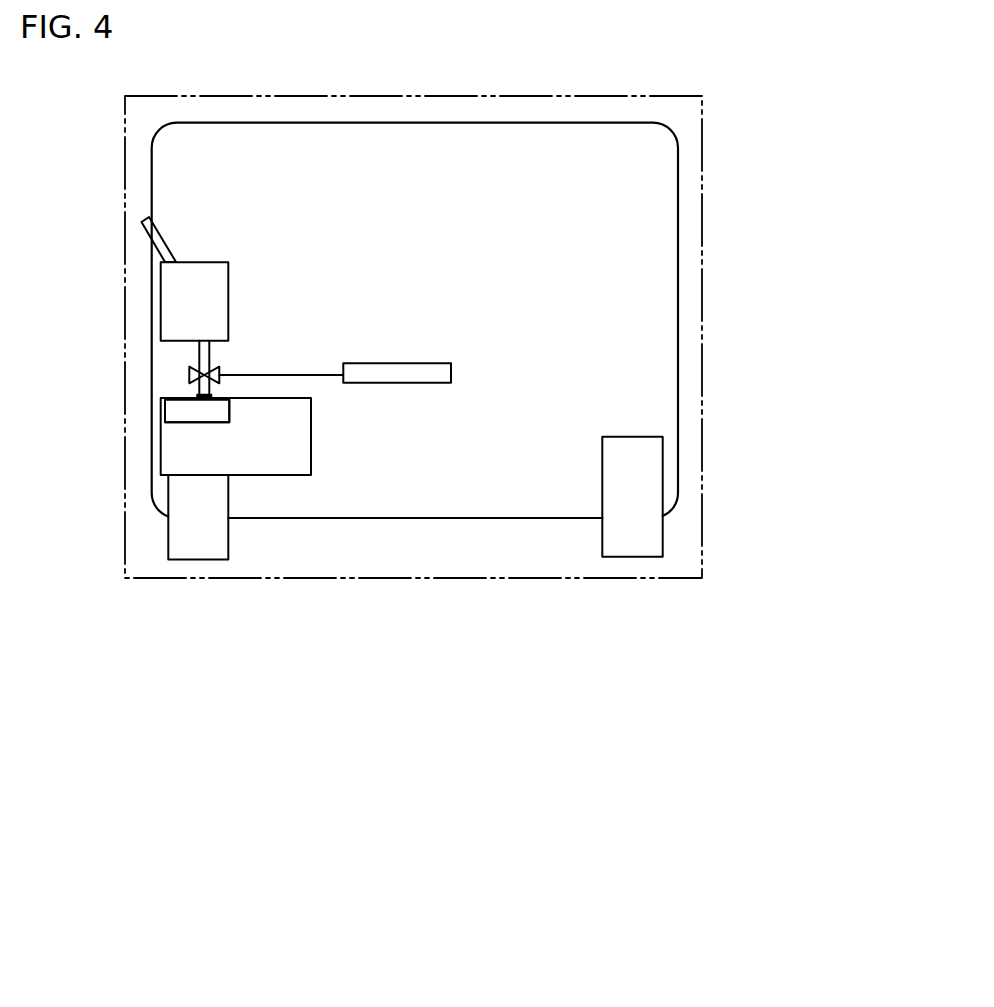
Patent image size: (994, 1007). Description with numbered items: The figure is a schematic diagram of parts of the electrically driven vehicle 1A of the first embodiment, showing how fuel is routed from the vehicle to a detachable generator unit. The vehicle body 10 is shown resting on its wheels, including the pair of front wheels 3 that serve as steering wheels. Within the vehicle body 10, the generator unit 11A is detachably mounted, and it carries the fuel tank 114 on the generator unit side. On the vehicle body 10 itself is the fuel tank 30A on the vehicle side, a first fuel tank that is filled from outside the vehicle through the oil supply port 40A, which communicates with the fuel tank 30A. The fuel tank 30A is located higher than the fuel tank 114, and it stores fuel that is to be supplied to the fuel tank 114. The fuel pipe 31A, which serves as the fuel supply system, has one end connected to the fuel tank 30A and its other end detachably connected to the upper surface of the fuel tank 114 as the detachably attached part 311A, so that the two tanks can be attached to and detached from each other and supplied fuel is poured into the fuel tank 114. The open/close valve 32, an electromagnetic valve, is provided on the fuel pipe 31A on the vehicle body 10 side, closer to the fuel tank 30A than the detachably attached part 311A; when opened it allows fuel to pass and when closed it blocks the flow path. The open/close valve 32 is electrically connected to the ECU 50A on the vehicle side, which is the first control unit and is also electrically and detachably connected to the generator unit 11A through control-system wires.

The electrically driven vehicle 1A is at (232, 96).
The vehicle body 10 is at (436, 122).
The oil supply port 40A is at (145, 227).
The fuel tank on the vehicle side 30A is at (173, 299).
The fuel pipe 31A is at (198, 347).
The open/close valve 32 is at (189, 372).
The detachably attached part 311A is at (180, 391).
The fuel tank on the generator unit side 114 is at (178, 412).
The generator unit 11A is at (283, 443).
The front wheels 3 is at (190, 538).
The ECU 50A is at (427, 375).